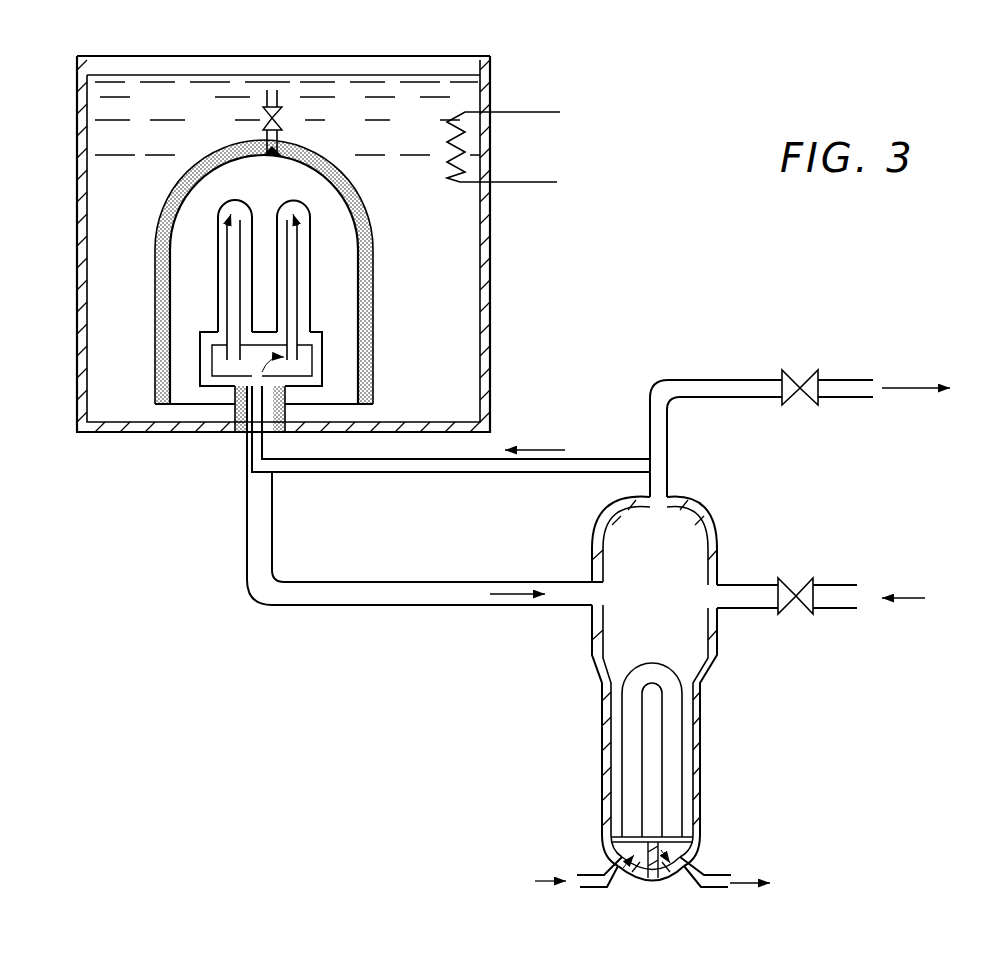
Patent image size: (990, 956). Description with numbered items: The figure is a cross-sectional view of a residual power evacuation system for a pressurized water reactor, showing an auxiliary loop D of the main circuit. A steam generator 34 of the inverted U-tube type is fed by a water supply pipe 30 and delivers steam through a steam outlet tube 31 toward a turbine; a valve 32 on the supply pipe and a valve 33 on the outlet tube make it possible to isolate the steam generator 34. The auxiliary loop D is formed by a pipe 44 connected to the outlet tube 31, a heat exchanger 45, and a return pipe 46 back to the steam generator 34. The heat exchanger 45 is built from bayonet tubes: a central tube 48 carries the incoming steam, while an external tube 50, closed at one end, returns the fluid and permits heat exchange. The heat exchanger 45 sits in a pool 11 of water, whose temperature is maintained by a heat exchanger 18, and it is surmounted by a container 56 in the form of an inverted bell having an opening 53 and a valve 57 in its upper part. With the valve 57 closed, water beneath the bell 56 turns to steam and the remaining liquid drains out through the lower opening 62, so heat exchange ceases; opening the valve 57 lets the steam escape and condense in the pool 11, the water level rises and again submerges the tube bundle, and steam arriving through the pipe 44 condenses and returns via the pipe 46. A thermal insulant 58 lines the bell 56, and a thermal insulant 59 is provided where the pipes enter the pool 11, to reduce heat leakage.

The pool 11 is at (77, 283).
The heat exchanger 18 is at (448, 150).
The water supply pipe 30 is at (843, 609).
The steam outlet tube 31 is at (740, 380).
The valve 32 is at (798, 612).
The valve 33 is at (798, 402).
The steam generator 34 is at (602, 744).
The pipe 44 is at (450, 473).
The heat exchanger 45 is at (205, 273).
The return pipe 46 is at (393, 587).
The central tube 48 is at (296, 271).
The external tube 50 is at (300, 204).
The opening 53 is at (272, 157).
The container 56 is at (328, 162).
The valve 57 is at (262, 120).
The thermal insulant 58 is at (365, 284).
The thermal insulant 59 is at (240, 418).
The lower opening 62 is at (364, 415).
The auxiliary loop D is at (186, 625).